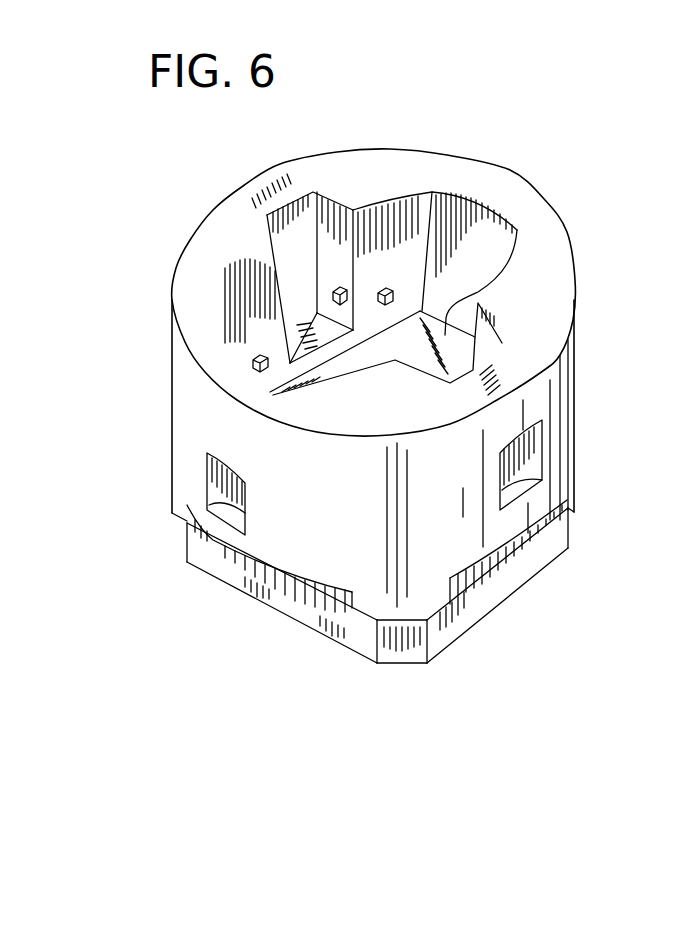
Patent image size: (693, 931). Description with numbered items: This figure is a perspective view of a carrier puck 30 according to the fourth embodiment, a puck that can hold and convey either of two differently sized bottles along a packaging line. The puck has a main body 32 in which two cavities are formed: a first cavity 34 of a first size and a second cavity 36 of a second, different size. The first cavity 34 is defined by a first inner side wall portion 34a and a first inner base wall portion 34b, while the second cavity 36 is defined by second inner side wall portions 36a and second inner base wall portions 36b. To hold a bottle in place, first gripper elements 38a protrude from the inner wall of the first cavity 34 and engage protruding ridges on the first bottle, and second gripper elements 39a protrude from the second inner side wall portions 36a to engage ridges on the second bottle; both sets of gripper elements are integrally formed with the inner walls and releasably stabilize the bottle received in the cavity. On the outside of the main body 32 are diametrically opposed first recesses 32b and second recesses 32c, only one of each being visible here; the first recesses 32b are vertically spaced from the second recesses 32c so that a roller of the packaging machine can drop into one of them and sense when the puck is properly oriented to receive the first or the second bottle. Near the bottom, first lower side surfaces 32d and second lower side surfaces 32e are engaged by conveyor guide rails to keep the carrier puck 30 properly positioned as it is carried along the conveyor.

The carrier puck 30 is at (466, 146).
The main body 32 is at (557, 284).
The first recesses 32b is at (235, 522).
The second recesses 32c is at (518, 487).
The first lower side surfaces 32d is at (478, 610).
The second lower side surfaces 32e is at (303, 608).
The first cavity 34 is at (467, 216).
The first inner side wall portion 34a is at (490, 235).
The first inner base wall portion 34b is at (452, 298).
The second cavity 36 is at (340, 220).
The second inner side wall portions 36a is at (300, 217).
The second inner base wall portions 36b is at (298, 357).
The first gripper elements 38a is at (388, 286).
The second gripper elements 39a is at (340, 290).